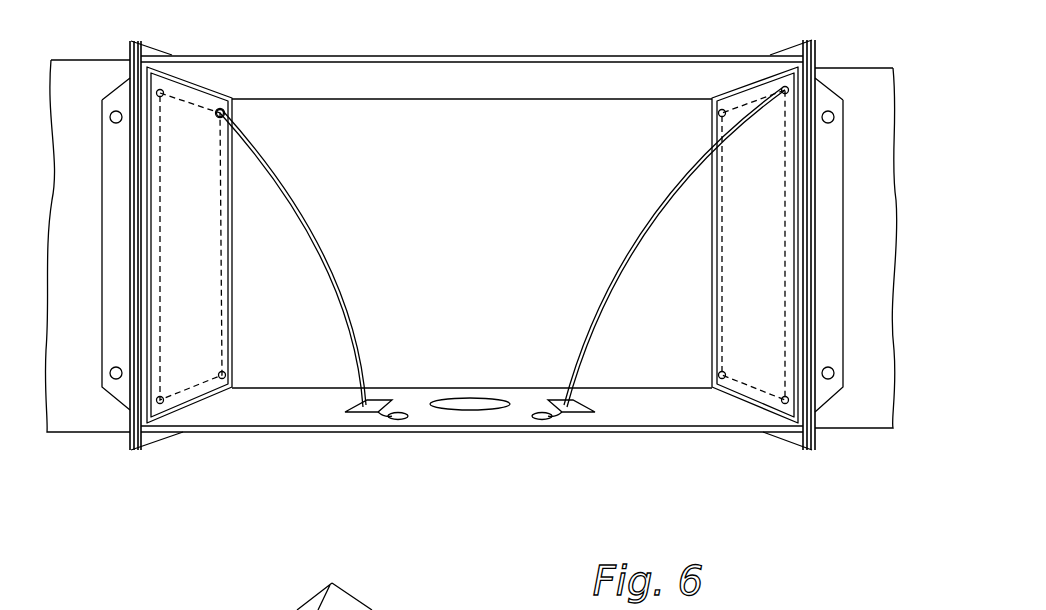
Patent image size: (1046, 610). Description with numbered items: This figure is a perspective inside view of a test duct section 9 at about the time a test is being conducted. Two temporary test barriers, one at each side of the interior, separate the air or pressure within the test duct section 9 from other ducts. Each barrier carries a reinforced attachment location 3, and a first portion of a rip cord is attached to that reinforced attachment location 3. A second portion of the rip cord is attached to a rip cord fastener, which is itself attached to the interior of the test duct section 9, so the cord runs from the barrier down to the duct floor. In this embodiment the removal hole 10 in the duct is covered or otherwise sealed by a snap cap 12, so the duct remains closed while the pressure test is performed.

The reinforced attachment location 3 is at (220, 113).
The test duct section 9 is at (600, 56).
The removal hole 10 is at (483, 410).
The snap cap 12 is at (460, 403).